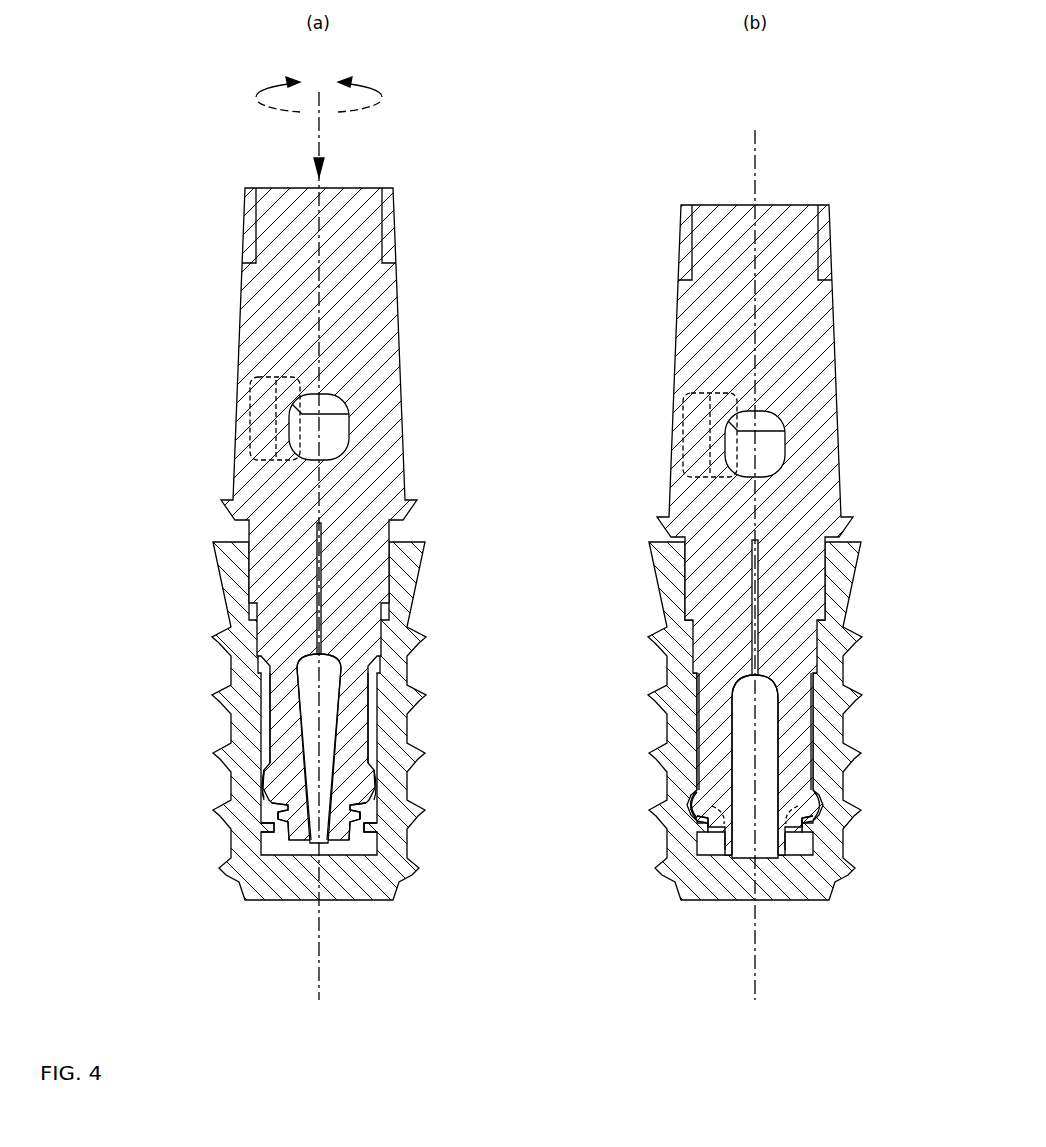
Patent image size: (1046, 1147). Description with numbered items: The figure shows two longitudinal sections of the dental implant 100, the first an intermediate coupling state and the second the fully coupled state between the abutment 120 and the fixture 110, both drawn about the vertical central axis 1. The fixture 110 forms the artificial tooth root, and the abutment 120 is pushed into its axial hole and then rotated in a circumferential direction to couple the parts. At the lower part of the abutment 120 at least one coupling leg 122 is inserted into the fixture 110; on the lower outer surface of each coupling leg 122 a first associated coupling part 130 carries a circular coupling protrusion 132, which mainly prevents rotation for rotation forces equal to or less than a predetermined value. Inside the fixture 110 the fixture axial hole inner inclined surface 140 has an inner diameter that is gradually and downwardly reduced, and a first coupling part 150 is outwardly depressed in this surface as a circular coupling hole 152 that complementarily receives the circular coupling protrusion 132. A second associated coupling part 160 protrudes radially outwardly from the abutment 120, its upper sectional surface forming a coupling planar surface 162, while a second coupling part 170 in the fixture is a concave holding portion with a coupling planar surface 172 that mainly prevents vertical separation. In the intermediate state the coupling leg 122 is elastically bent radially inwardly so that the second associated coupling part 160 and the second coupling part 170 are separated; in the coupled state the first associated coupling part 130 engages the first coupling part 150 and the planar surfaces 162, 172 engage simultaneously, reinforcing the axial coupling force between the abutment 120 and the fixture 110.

The vertical central axis 1 is at (318, 988).
The dental implant 100 is at (172, 393).
The fixture 110 is at (412, 689).
The abutment 120 is at (396, 392).
The coupling leg 122 is at (335, 778).
The first associated coupling part 130 is at (266, 790).
The circular coupling protrusion 132 is at (480, 795).
The fixture axial hole inner inclined surface 140 is at (264, 826).
The first coupling part 150 is at (706, 824).
The circular coupling hole 152 is at (755, 817).
The second associated coupling part 160 is at (289, 832).
The coupling planar surface of the second associated coupling part 162 is at (278, 820).
The second coupling part 170 is at (375, 838).
The coupling planar surface of the second coupling part 172 is at (581, 819).